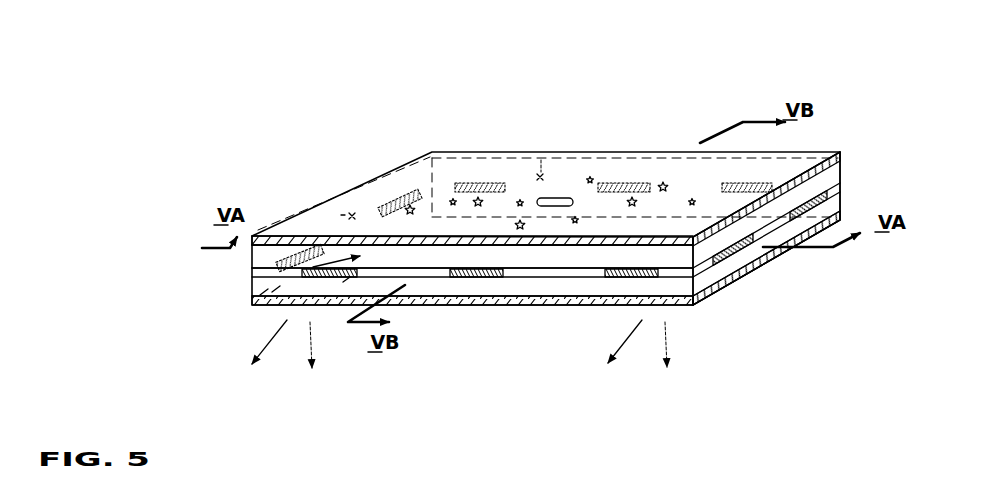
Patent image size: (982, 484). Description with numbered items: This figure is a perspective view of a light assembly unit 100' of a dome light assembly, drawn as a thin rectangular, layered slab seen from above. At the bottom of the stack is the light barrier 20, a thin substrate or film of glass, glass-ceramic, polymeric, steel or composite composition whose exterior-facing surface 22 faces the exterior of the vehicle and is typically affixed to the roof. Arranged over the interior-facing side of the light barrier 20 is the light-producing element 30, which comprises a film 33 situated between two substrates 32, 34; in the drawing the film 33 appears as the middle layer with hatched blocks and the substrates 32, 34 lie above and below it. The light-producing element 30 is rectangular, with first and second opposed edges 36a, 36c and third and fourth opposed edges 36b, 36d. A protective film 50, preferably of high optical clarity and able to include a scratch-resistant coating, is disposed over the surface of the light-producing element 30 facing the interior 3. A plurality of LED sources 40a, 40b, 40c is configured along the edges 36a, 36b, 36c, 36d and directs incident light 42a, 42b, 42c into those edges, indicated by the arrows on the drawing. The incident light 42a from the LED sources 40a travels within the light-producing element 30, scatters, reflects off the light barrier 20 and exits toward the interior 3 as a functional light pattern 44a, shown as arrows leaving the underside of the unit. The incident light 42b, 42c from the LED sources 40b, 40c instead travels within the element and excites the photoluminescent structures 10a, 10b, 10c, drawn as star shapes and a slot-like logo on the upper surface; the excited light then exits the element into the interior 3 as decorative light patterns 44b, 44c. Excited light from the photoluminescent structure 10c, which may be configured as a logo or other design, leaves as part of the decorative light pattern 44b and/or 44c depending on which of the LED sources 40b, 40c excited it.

The light assembly unit 100' is at (546, 160).
The light barrier 20 is at (833, 157).
The exterior-facing surface 22 is at (583, 165).
The light-producing element 30 is at (828, 178).
The substrate 32 is at (268, 254).
The film 33 is at (427, 275).
The substrate 34 is at (255, 308).
The first edge 36a is at (750, 264).
The third edge 36b is at (553, 286).
The second edge 36c is at (343, 213).
The fourth edge 36d is at (544, 160).
The LED source 40a is at (493, 278).
The LED source 40b is at (738, 250).
The LED source 40c is at (295, 248).
The incident light 42a is at (328, 248).
The incident light 42b is at (400, 222).
The incident light 42c is at (785, 203).
The functional light pattern 44a is at (263, 348).
The decorative light pattern 44b is at (667, 350).
The decorative light pattern 44c is at (488, 345).
The protective film 50 is at (828, 225).
The photoluminescent structure 10a is at (452, 198).
The photoluminescent structure 10b is at (478, 197).
The photoluminescent structure 10c is at (537, 198).
The interior 3 is at (441, 341).